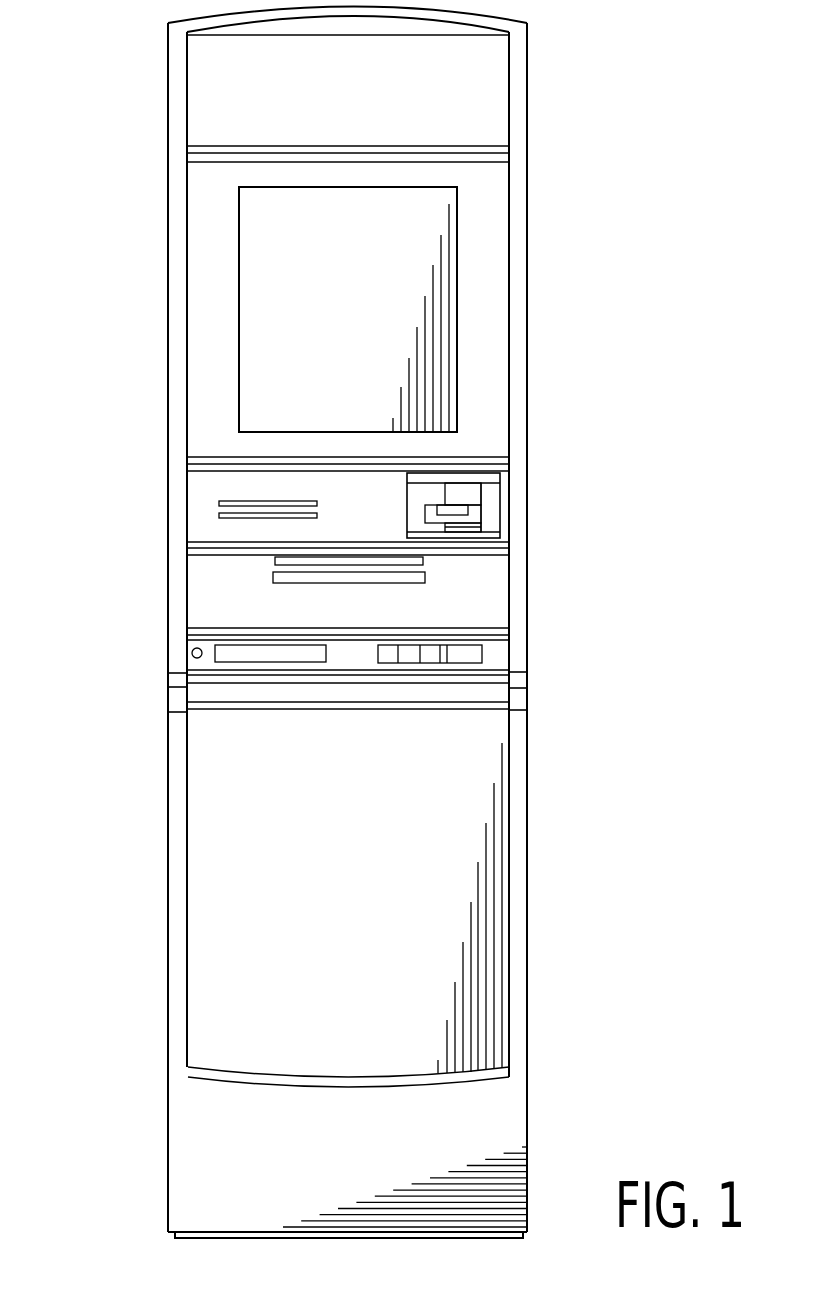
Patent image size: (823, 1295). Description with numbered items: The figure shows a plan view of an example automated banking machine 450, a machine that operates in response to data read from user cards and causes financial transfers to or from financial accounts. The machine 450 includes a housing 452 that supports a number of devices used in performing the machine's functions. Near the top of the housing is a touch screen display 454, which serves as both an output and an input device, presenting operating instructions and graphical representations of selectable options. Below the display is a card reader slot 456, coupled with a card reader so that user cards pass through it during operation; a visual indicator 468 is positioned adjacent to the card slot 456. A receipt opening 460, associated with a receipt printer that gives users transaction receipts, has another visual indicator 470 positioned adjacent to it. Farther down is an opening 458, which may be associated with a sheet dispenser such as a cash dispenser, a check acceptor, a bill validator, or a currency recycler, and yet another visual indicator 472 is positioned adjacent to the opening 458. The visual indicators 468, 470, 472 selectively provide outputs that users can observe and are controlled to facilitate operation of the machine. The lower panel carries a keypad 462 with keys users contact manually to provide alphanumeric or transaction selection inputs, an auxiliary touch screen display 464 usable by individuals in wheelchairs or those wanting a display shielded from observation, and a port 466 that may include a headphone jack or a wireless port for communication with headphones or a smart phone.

The automated banking machine 450 is at (712, 182).
The housing 452 is at (528, 390).
The touch screen display 454 is at (403, 280).
The card reader slot 456 is at (474, 515).
The opening 458 is at (427, 573).
The receipt opening 460 is at (242, 512).
The keypad 462 is at (476, 656).
The auxiliary touch screen display 464 is at (228, 648).
The port 466 is at (192, 653).
The visual indicator 468 is at (508, 477).
The visual indicator 470 is at (240, 500).
The visual indicator 472 is at (273, 558).